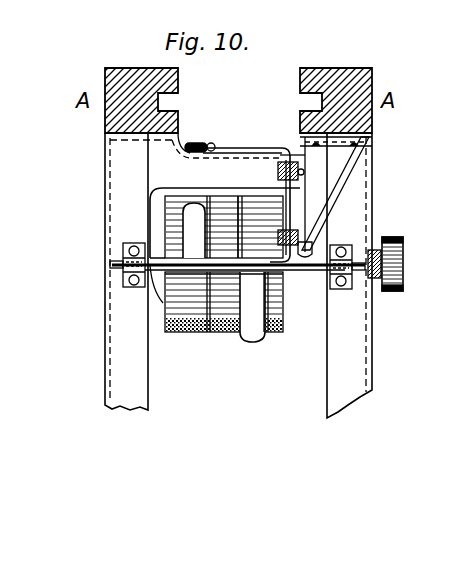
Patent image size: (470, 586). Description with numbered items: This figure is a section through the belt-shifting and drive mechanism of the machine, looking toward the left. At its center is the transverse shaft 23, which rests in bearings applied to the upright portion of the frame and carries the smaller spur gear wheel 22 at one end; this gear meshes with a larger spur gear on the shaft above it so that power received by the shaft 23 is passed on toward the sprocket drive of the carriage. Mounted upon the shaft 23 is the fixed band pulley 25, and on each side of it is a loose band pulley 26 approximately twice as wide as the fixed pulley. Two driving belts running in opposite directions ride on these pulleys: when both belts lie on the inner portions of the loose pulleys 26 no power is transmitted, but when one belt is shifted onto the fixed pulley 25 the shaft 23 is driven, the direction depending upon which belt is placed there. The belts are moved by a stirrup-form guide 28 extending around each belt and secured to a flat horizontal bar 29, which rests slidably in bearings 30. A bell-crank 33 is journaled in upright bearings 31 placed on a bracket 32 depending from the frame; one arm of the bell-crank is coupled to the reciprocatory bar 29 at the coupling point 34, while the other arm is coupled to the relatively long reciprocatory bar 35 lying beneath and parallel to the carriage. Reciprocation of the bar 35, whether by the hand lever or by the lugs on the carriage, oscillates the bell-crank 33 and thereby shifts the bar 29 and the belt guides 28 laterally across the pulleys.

The spur gear wheel 22 is at (405, 270).
The shaft 23 is at (292, 273).
The fixed band pulley 25 is at (226, 333).
The loose band pulley 26 is at (192, 335).
The stirrup-form guide 28 is at (150, 224).
The flat horizontal bar 29 is at (173, 270).
The bearings 30 is at (123, 276).
The upright bearings 31 is at (315, 181).
The bracket 32 is at (318, 194).
The bell-crank 33 is at (240, 147).
The coupling point of bell-crank arm to bar 34 is at (268, 250).
The reciprocatory bar 35 is at (205, 140).